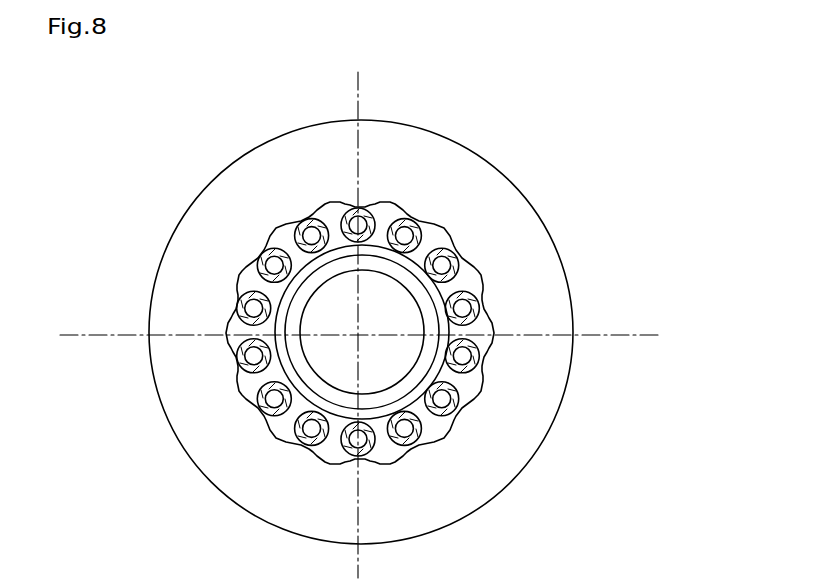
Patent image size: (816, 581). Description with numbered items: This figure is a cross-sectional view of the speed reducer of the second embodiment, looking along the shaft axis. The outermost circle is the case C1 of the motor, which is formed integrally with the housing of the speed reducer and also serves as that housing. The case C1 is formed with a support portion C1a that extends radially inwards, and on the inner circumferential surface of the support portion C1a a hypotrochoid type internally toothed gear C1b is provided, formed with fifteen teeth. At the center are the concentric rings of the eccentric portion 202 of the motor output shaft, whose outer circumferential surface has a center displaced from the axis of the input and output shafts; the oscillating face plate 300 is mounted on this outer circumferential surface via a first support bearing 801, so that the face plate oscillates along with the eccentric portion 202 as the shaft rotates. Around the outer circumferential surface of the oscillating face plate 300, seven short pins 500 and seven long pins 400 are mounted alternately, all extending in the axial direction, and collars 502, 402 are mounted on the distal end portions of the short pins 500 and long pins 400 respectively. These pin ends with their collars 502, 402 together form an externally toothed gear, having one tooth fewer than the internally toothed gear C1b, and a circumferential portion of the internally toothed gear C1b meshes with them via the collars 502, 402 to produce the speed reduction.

The case C1 is at (160, 290).
The support portion C1a is at (307, 457).
The internally toothed gear C1b is at (456, 253).
The eccentric portion 202 is at (342, 218).
The oscillating face plate 300 is at (412, 400).
The long pins 400 is at (369, 171).
The collars 402 is at (369, 175).
The short pins 500 is at (467, 303).
The collars 502 is at (429, 375).
The first support bearing 801 is at (256, 361).